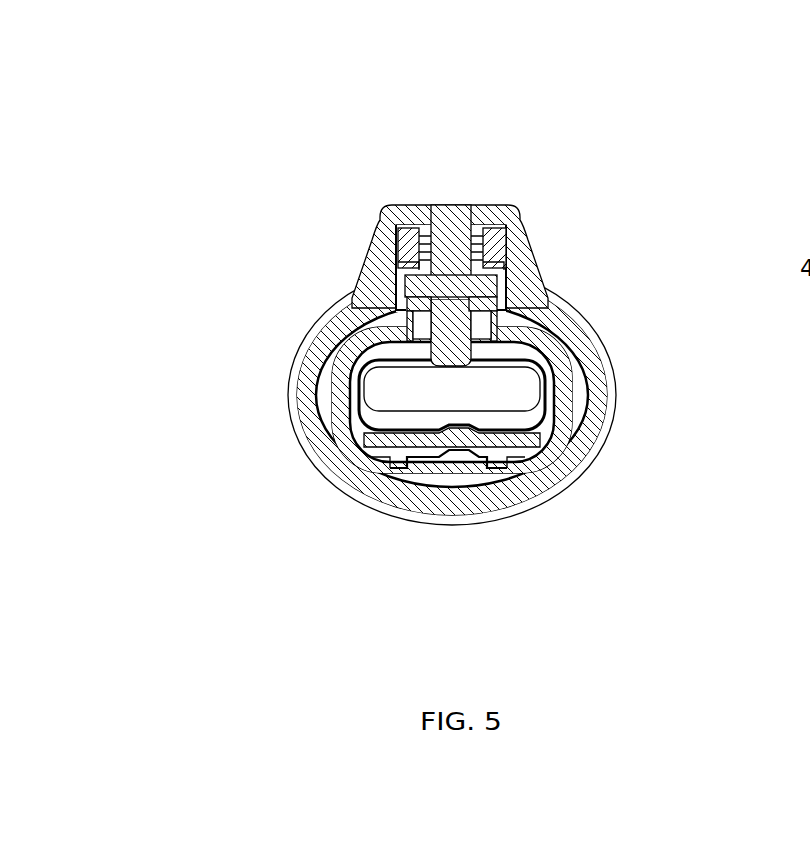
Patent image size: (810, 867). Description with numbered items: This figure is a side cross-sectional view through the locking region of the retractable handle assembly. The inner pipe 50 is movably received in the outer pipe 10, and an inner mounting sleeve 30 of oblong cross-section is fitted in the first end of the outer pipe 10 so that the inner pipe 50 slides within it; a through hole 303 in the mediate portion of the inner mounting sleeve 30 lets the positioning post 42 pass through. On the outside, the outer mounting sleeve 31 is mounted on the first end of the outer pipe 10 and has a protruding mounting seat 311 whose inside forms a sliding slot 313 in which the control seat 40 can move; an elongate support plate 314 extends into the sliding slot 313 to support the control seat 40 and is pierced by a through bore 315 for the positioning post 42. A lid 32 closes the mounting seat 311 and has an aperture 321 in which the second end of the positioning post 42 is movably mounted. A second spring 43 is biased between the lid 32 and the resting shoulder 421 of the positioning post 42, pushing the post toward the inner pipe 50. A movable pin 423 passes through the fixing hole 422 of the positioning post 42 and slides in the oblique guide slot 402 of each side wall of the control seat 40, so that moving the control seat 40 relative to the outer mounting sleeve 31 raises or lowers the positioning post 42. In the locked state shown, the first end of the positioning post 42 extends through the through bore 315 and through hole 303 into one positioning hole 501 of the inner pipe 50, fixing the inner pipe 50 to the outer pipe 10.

The outer pipe 10 is at (330, 476).
The inner mounting sleeve 30 is at (586, 410).
The through hole 303 is at (447, 362).
The outer mounting sleeve 31 is at (548, 366).
The mounting seat 311 is at (528, 284).
The sliding slot 313 is at (510, 232).
The support plate 314 is at (493, 318).
The through bore 315 is at (500, 339).
The lid 32 is at (436, 182).
The aperture 321 is at (505, 207).
The control seat 40 is at (461, 182).
The oblique guide slot 402 is at (382, 265).
The positioning post 42 is at (348, 242).
The resting shoulder 421 is at (407, 340).
The fixing hole 422 is at (429, 152).
The movable pin 423 is at (445, 206).
The second spring 43 is at (433, 206).
The inner pipe 50 is at (567, 477).
The positioning hole 501 is at (453, 366).